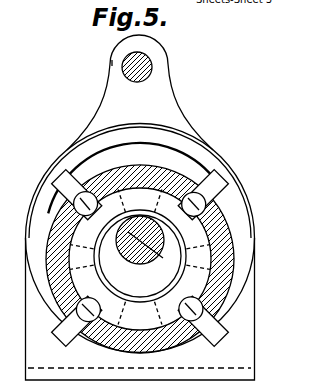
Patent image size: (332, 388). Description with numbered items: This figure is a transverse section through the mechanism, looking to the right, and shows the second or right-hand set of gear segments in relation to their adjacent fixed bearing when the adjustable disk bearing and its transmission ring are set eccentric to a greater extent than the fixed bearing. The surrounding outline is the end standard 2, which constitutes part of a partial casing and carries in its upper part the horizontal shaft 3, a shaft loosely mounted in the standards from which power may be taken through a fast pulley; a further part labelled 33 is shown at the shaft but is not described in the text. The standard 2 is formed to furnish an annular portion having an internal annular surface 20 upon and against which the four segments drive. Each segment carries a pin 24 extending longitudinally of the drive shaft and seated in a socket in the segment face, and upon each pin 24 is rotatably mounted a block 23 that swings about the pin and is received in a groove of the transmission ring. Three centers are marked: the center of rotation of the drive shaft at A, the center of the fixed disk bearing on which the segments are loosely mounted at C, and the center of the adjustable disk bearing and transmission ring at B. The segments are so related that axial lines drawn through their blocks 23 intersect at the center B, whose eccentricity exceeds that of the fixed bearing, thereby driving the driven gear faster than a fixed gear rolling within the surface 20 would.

The end standard 2 is at (165, 97).
The horizontal shaft 3 is at (152, 66).
The pin 33 is at (112, 63).
The annular surface 20 is at (113, 152).
The block 23 is at (228, 186).
The pin 24 is at (56, 347).
The center of rotation of the shaft A is at (144, 242).
The center of the adjustable disk bearing B is at (154, 272).
The center of the fixed disk bearing C is at (128, 256).